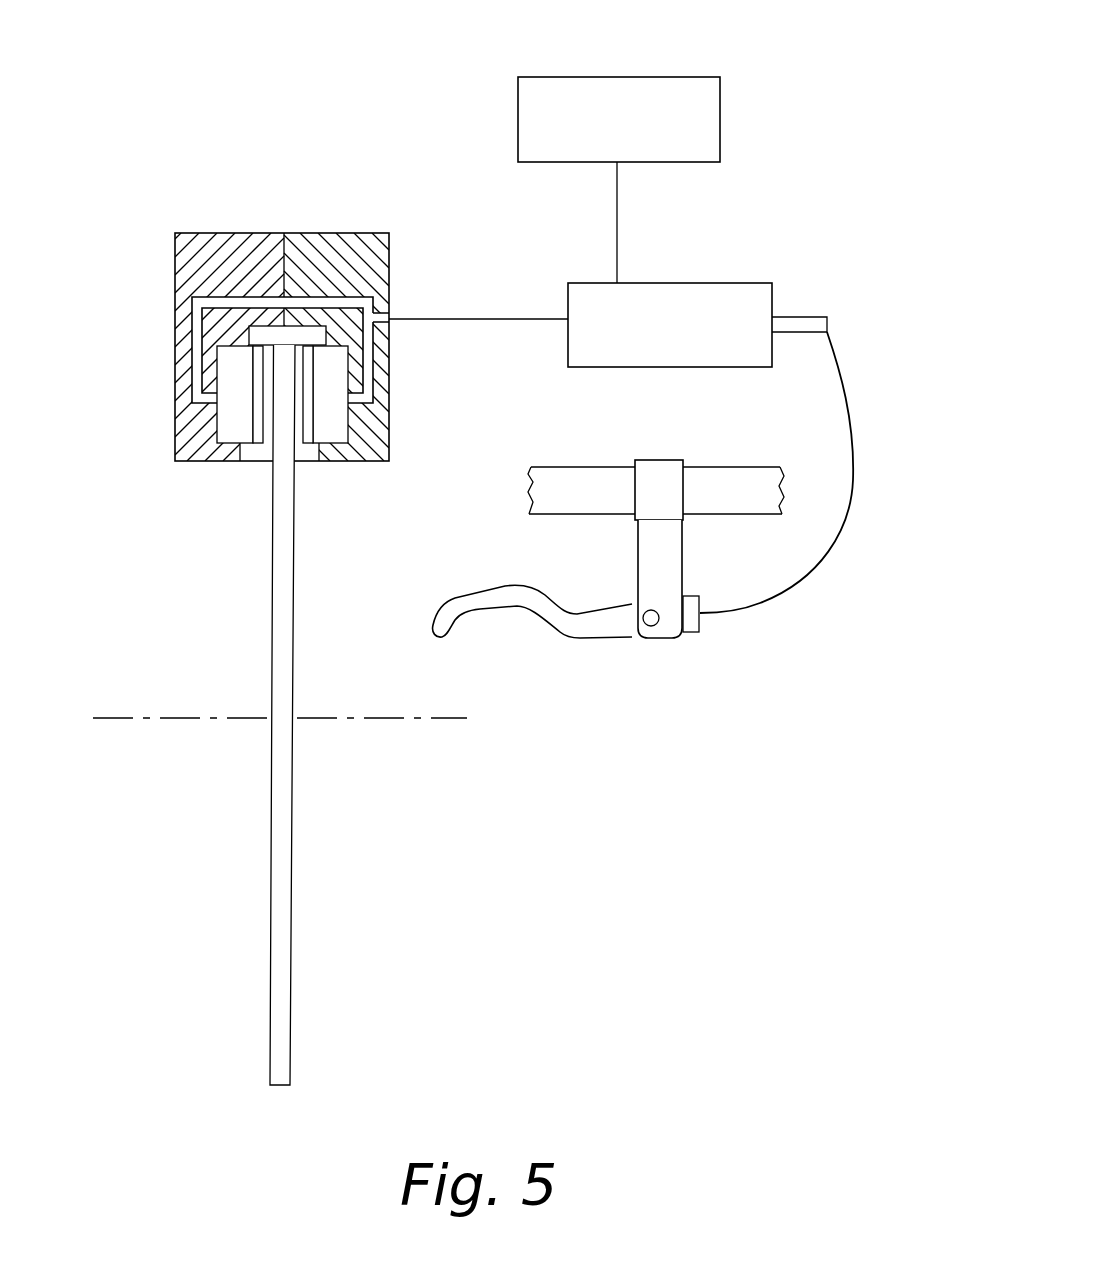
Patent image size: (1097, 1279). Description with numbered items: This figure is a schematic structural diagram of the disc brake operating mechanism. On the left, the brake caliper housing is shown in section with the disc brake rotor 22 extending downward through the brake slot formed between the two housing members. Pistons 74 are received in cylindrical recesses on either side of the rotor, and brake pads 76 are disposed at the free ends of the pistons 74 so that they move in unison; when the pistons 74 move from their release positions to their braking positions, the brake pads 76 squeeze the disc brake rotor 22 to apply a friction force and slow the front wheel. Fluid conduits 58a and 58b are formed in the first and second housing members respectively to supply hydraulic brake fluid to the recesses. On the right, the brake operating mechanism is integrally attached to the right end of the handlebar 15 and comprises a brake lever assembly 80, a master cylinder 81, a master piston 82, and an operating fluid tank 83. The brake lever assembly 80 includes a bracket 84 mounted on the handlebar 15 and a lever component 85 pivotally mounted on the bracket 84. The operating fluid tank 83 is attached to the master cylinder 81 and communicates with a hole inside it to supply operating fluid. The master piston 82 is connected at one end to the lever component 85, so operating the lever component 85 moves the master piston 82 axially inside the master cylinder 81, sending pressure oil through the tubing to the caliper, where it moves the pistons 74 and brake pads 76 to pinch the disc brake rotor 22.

The handlebar 15 is at (567, 467).
The disc brake rotor 22 is at (292, 827).
The fluid conduit 58a is at (197, 372).
The fluid conduit 58b is at (367, 370).
The piston 74 is at (230, 427).
The brake pad 76 is at (258, 435).
The brake lever assembly 80 is at (585, 608).
The master cylinder 81 is at (703, 283).
The master piston 82 is at (810, 317).
The operating fluid tank 83 is at (685, 77).
The bracket 84 is at (635, 560).
The lever component 85 is at (540, 622).